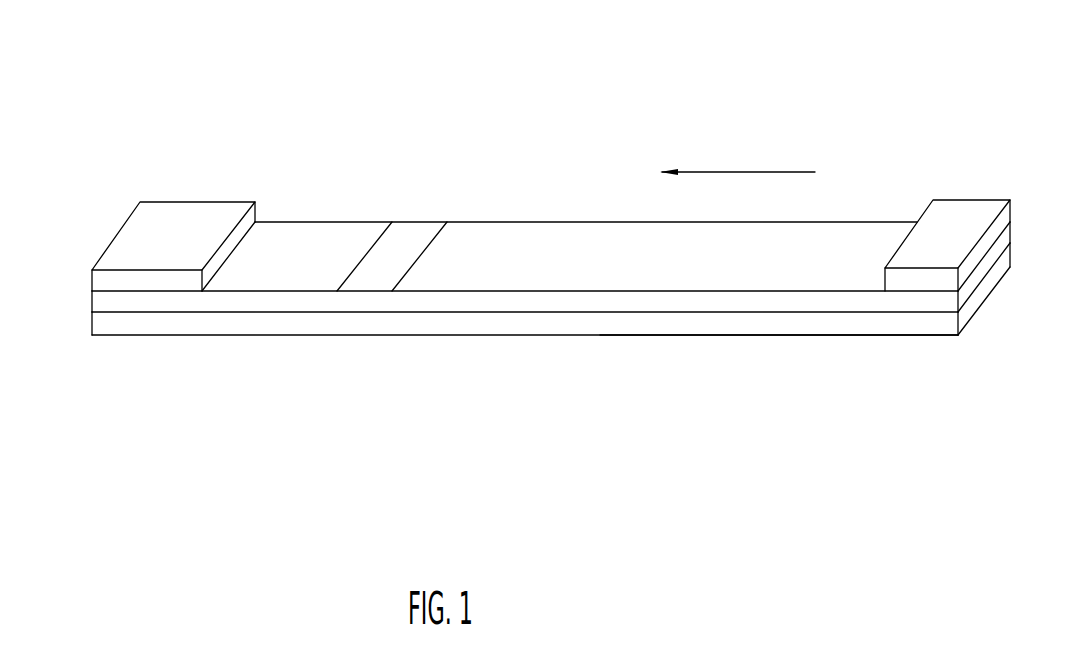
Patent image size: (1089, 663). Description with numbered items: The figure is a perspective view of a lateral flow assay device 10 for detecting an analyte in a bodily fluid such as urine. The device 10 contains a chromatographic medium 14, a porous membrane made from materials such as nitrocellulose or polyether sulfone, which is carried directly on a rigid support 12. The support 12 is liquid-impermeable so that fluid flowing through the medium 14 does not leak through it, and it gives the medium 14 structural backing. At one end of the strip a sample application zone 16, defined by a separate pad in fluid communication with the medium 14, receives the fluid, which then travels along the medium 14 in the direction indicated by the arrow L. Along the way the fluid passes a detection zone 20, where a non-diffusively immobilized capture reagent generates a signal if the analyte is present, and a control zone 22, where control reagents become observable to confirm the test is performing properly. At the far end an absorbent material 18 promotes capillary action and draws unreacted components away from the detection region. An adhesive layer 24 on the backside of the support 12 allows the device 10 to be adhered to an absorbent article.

The lateral flow assay device 10 is at (576, 244).
The rigid support 12 is at (223, 320).
The chromatographic medium 14 is at (613, 303).
The sample application zone 16 is at (963, 222).
The absorbent material 18 is at (203, 218).
The detection zone 20 is at (433, 237).
The control zone 22 is at (383, 235).
The adhesive layer 24 is at (800, 340).